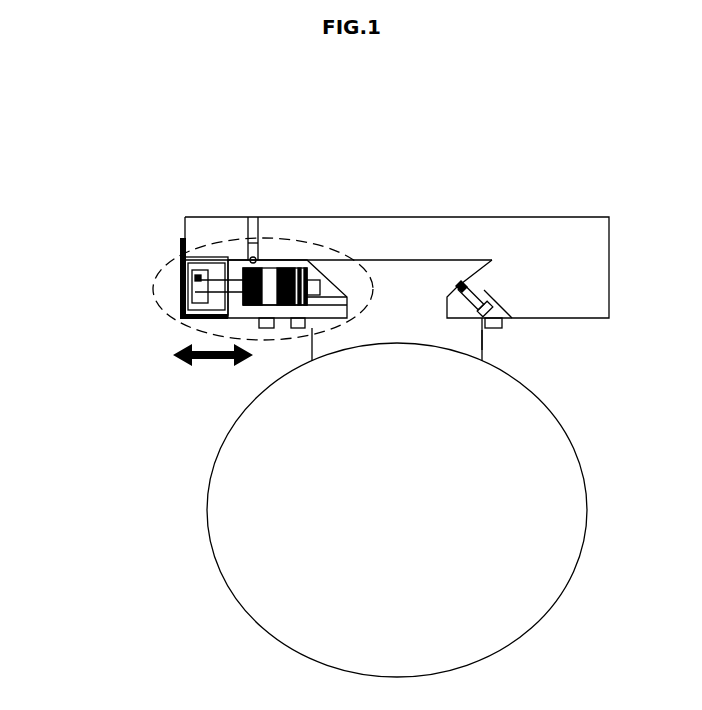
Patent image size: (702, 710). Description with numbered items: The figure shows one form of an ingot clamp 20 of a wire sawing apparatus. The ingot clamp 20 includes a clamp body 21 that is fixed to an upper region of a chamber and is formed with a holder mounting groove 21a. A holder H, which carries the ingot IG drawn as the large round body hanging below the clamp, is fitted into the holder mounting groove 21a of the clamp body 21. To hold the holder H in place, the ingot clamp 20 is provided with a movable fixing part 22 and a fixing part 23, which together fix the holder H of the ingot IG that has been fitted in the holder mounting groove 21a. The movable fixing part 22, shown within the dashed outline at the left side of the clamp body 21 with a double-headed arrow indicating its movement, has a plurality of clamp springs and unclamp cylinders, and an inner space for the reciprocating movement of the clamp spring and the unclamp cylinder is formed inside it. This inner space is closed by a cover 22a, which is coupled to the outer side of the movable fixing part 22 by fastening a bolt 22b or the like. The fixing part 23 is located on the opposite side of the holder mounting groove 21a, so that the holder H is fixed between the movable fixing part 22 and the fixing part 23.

The ingot clamp 20 is at (135, 150).
The clamp body 21 is at (452, 227).
The holder mounting groove 21a is at (397, 260).
The movable fixing part 22 is at (207, 245).
The cover 22a is at (185, 277).
The bolt 22b is at (180, 252).
The fixing part 23 is at (465, 285).
The holder H is at (482, 338).
The ingot IG is at (556, 432).